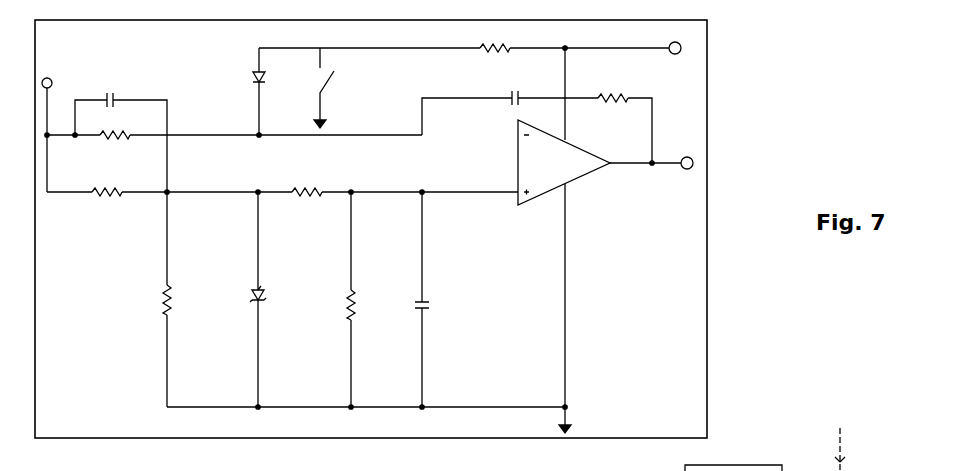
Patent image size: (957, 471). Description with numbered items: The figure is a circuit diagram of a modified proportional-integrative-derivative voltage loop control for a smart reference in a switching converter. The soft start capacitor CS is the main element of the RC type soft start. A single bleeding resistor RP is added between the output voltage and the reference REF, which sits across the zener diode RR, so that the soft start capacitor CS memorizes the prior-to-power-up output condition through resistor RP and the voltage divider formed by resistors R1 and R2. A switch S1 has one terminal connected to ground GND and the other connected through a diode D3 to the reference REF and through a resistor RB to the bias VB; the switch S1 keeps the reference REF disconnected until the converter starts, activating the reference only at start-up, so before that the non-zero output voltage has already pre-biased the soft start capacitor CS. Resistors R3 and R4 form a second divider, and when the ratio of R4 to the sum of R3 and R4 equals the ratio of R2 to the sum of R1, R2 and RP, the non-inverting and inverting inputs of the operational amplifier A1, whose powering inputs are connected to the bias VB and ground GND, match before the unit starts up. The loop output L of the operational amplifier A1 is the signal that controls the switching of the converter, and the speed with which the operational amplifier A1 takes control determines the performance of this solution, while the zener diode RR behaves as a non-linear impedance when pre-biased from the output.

The resistor R3 is at (234, 129).
The bleeding resistor RP is at (169, 207).
The resistor R1 is at (405, 183).
The resistor R2 is at (362, 299).
The resistor R4 is at (178, 271).
The zener diode RR is at (264, 299).
The reference REF is at (280, 293).
The soft start capacitor CS is at (431, 299).
The diode D3 is at (247, 91).
The switch S1 is at (335, 88).
The ground GND is at (473, 274).
The resistor RB is at (464, 38).
The bias VB is at (684, 40).
The operational amplifier A1 is at (599, 227).
The loop output L is at (687, 176).